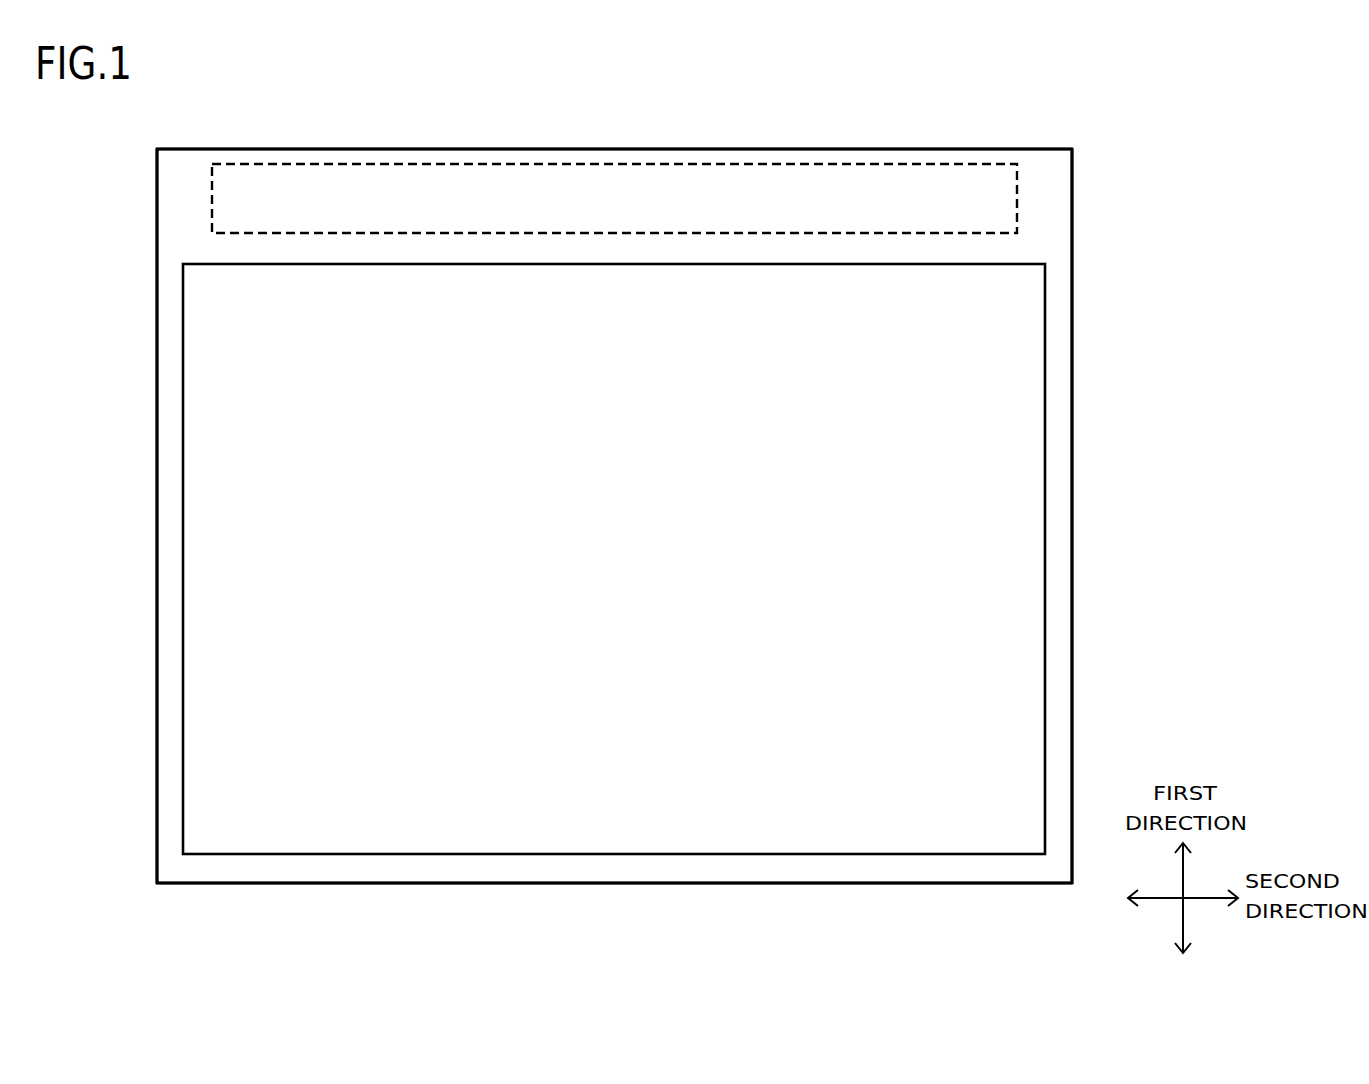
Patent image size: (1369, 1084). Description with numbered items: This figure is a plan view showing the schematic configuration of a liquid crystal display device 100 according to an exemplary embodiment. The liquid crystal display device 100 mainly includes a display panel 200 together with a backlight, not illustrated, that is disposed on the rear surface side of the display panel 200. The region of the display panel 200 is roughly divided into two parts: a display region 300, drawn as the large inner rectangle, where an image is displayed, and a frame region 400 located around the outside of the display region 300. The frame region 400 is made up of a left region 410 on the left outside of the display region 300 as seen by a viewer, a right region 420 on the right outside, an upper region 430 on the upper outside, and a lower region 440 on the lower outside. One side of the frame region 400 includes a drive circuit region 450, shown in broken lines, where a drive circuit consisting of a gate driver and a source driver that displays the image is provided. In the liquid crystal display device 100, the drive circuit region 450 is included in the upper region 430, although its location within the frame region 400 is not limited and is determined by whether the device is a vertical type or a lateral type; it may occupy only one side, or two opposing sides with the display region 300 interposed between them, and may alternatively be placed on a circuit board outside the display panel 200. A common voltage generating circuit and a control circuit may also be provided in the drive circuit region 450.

The liquid crystal display device 100 is at (1131, 130).
The display panel 200 is at (1072, 347).
The display region 300 is at (1017, 470).
The frame region 400 is at (168, 352).
The left region 410 is at (165, 552).
The right region 420 is at (1060, 553).
The upper region 430 is at (611, 158).
The lower region 440 is at (618, 870).
The drive circuit region 450 is at (828, 163).